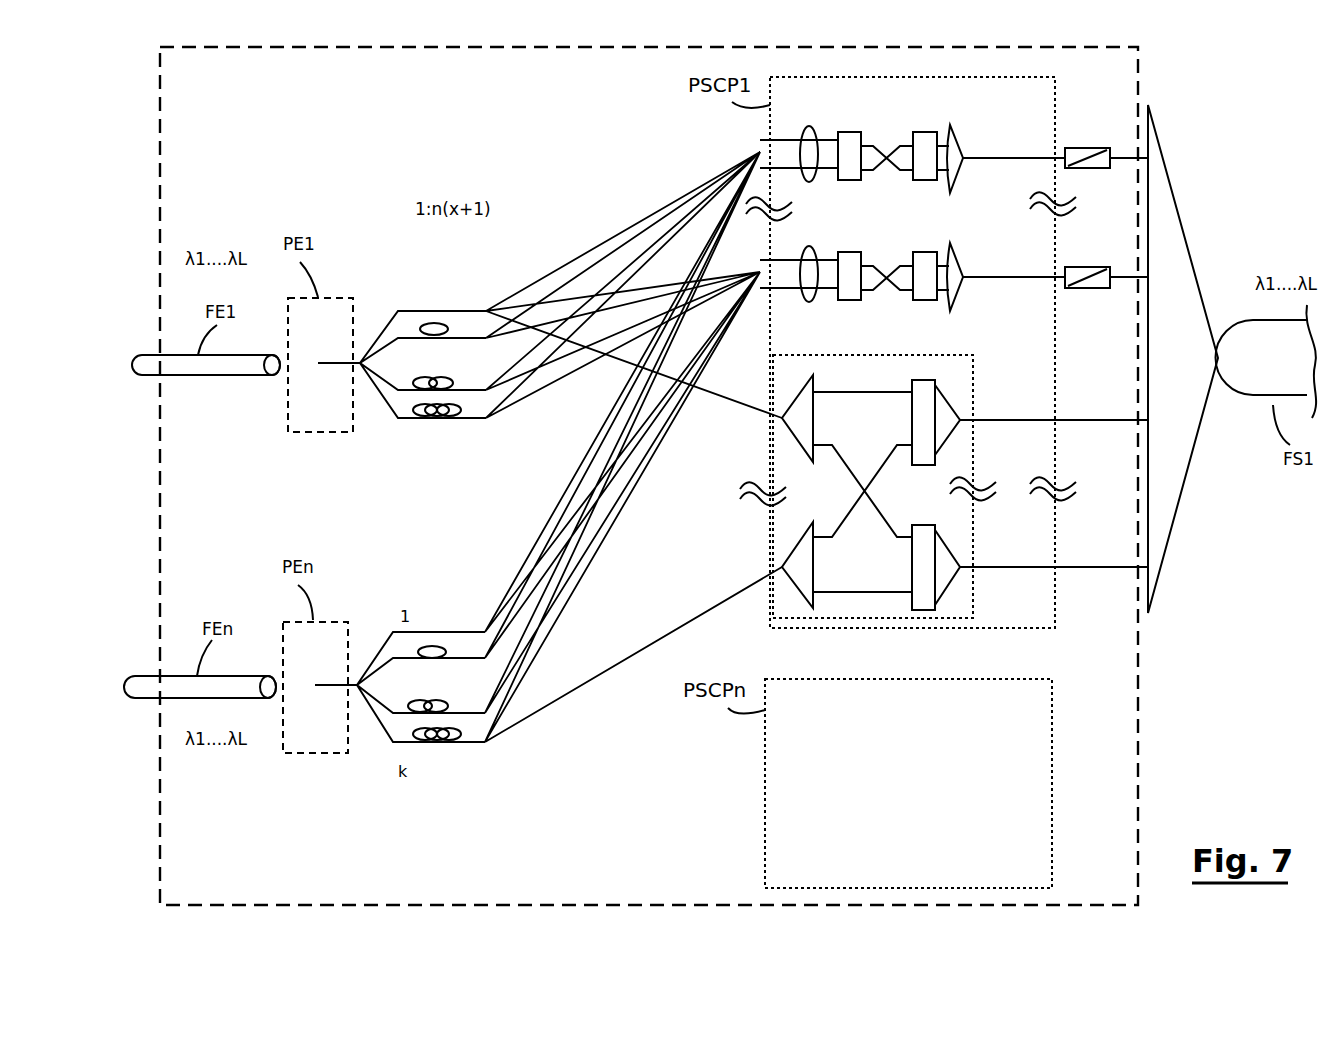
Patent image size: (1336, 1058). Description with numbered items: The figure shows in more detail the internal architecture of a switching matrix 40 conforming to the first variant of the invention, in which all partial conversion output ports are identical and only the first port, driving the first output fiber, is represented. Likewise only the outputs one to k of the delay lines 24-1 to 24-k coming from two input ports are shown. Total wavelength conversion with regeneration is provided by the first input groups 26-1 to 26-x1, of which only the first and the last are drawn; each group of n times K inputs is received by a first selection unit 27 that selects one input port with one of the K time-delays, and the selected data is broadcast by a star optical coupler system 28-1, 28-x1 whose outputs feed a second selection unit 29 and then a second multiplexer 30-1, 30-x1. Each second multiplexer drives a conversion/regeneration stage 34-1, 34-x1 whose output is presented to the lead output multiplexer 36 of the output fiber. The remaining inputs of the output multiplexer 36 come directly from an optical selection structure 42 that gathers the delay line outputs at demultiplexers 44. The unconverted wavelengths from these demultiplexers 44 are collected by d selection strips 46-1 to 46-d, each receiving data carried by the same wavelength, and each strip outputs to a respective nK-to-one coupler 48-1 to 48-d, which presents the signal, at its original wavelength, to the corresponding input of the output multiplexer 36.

The switching matrix 40 is at (307, 131).
The optical delay line 24-1 is at (430, 310).
The optical delay line 24-k is at (437, 420).
The input group 26-1 is at (812, 182).
The input group 26-x1 is at (812, 302).
The first selection unit 27 is at (845, 130).
The star optical coupler system 28-1 is at (893, 174).
The star optical coupler system 28-x1 is at (893, 294).
The second selection unit 29 is at (925, 130).
The second multiplexer 30-1 is at (960, 140).
The second multiplexer 30-x1 is at (960, 262).
The conversion/regeneration stage 34-1 is at (1068, 146).
The conversion/regeneration stage 34-x1 is at (1090, 290).
The output multiplexer 36 is at (1200, 275).
The optical selection structure 42 is at (940, 499).
The demultiplexer 44 is at (786, 425).
The selection strip 46-1 is at (918, 435).
The selection strip 46-d is at (918, 578).
The nK:1 coupler 48-1 is at (958, 400).
The nK:1 coupler 48-d is at (958, 547).